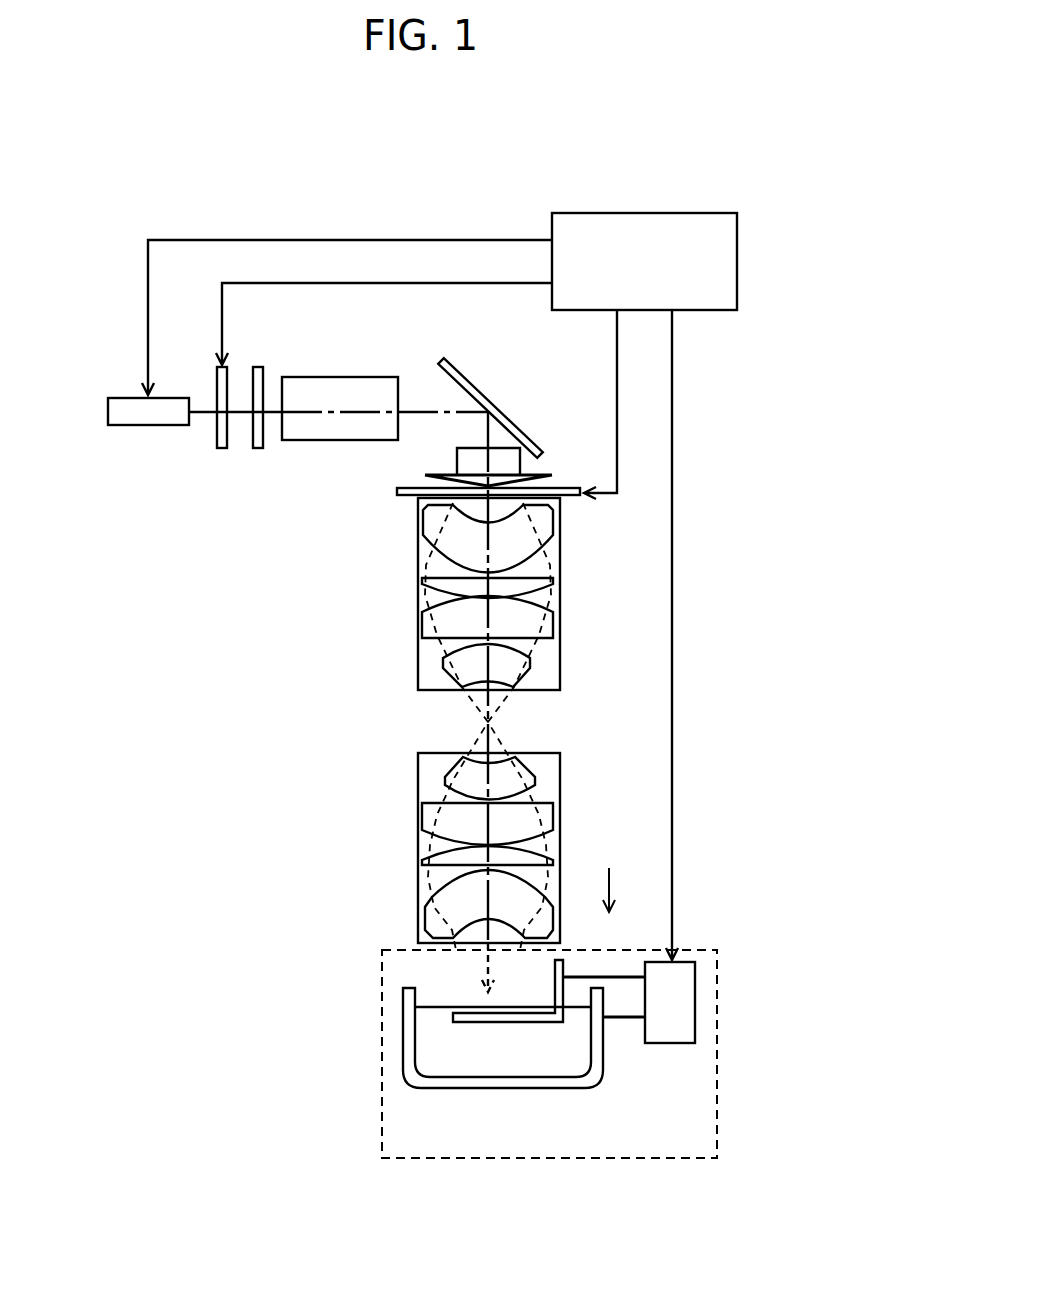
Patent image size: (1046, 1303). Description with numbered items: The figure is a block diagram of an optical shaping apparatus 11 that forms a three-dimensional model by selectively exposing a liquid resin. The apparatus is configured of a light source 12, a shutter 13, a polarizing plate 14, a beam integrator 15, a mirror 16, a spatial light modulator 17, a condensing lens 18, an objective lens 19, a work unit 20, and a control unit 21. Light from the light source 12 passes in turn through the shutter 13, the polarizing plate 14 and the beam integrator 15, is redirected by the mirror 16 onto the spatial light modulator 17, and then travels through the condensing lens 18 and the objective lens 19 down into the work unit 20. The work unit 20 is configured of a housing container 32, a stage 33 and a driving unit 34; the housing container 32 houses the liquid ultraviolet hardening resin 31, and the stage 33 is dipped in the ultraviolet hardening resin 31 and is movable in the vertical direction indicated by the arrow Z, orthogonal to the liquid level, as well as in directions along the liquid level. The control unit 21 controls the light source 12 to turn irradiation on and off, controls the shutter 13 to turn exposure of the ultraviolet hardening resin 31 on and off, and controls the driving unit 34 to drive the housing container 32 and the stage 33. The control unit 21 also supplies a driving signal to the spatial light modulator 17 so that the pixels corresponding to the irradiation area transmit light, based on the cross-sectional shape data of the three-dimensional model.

The optical shaping apparatus 11 is at (557, 172).
The light source 12 is at (106, 410).
The shutter 13 is at (222, 449).
The polarizing plate 14 is at (257, 366).
The beam integrator 15 is at (334, 376).
The mirror 16 is at (496, 404).
The spatial light modulator 17 is at (396, 491).
The condensing lens 18 is at (561, 598).
The objective lens 19 is at (561, 793).
The work unit 20 is at (718, 1015).
The control unit 21 is at (738, 258).
The ultraviolet hardening resin 31 is at (442, 1055).
The housing container 32 is at (575, 1086).
The stage 33 is at (503, 1023).
The driving unit 34 is at (672, 1044).